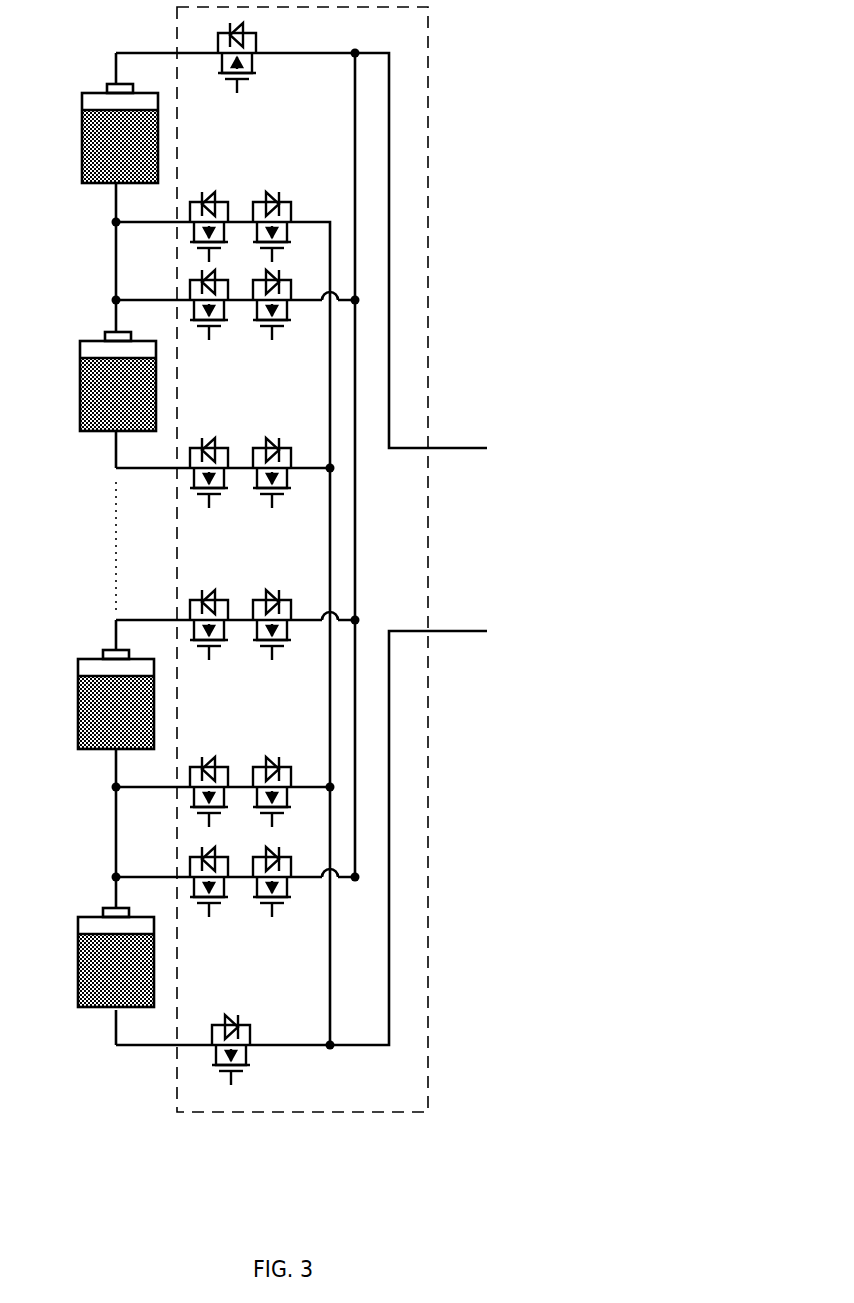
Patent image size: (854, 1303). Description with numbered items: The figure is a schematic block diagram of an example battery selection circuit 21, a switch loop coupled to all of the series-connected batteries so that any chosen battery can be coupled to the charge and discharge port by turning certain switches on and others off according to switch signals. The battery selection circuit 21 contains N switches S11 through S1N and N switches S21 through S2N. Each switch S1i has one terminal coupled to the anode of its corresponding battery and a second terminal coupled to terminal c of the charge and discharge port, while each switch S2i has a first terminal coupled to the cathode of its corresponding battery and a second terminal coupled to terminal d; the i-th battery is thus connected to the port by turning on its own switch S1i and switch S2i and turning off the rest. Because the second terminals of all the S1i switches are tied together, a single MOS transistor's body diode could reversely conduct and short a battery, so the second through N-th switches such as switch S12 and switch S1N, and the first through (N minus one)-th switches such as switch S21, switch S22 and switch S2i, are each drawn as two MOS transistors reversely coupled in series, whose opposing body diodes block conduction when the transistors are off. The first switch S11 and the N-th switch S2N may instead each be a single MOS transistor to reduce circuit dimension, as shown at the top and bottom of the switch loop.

The battery selection circuit 21 is at (358, 559).
The switch S11 is at (239, 77).
The switch S21 is at (240, 205).
The switch S12 is at (240, 323).
The switch S22 is at (240, 455).
The switch S1i is at (240, 647).
The switch S2i is at (240, 777).
The switch S1N is at (240, 900).
The switch S2N is at (236, 1032).